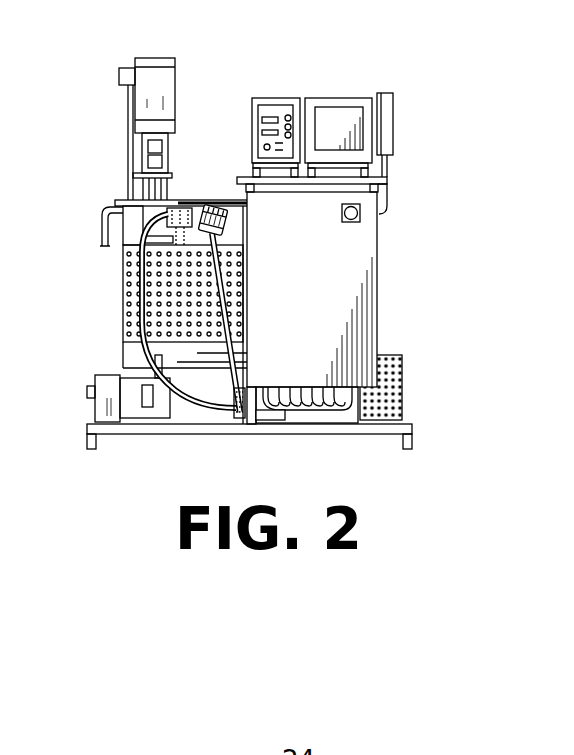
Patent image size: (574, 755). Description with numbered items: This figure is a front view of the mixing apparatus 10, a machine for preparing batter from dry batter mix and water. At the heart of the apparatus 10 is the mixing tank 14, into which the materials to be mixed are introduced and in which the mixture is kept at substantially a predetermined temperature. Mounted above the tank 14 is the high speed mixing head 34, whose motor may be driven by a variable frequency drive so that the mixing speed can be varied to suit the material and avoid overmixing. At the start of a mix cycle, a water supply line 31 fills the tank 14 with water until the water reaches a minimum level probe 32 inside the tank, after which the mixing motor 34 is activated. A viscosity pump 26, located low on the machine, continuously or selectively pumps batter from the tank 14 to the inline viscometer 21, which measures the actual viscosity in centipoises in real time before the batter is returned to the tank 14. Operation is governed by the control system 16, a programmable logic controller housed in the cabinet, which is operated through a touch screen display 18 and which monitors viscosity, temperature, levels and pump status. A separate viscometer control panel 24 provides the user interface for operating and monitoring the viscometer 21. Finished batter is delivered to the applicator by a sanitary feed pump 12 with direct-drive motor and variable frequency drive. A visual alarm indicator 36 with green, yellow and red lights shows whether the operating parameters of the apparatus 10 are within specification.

The mixing apparatus 10 is at (404, 299).
The feed pump 12 is at (100, 380).
The mixing tank 14 is at (123, 262).
The control system 16 is at (370, 235).
The touch screen display 18 is at (343, 115).
The inline viscometer 21 is at (228, 228).
The viscometer control panel 24 is at (283, 115).
The viscosity pump 26 is at (268, 414).
The water supply line 31 is at (219, 203).
The minimum level probe 32 is at (178, 207).
The mixing head 34 is at (145, 72).
The visual alarm indicator 36 is at (393, 118).